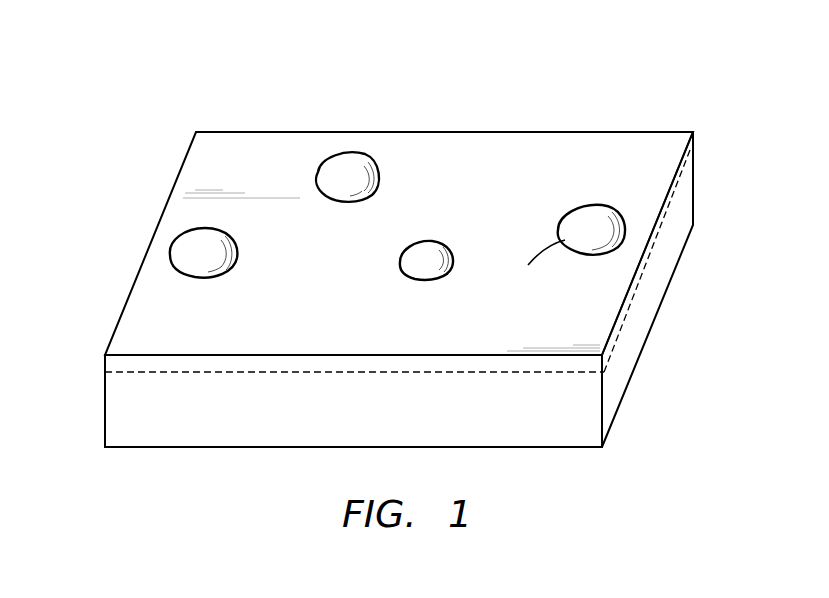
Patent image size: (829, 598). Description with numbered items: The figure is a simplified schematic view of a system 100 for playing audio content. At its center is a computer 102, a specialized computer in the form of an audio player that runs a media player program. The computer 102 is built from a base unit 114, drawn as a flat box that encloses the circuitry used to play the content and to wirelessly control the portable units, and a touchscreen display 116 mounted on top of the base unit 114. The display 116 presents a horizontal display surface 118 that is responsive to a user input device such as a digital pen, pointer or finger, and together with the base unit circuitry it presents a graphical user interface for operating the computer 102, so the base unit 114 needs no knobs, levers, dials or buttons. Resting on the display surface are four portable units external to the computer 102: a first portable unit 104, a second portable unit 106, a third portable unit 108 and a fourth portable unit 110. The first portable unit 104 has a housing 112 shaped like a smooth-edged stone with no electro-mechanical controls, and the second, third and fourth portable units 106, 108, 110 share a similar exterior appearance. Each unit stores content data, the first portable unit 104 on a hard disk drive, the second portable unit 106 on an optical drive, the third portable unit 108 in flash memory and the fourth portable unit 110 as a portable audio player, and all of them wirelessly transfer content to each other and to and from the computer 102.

The system 100 is at (566, 83).
The computer 102 is at (396, 316).
The first portable unit 104 is at (582, 215).
The second portable unit 106 is at (188, 265).
The third portable unit 108 is at (324, 172).
The fourth portable unit 110 is at (405, 262).
The housing 112 is at (535, 271).
The base unit 114 is at (136, 425).
The touchscreen display 116 is at (113, 362).
The horizontal display surface 118 is at (602, 310).